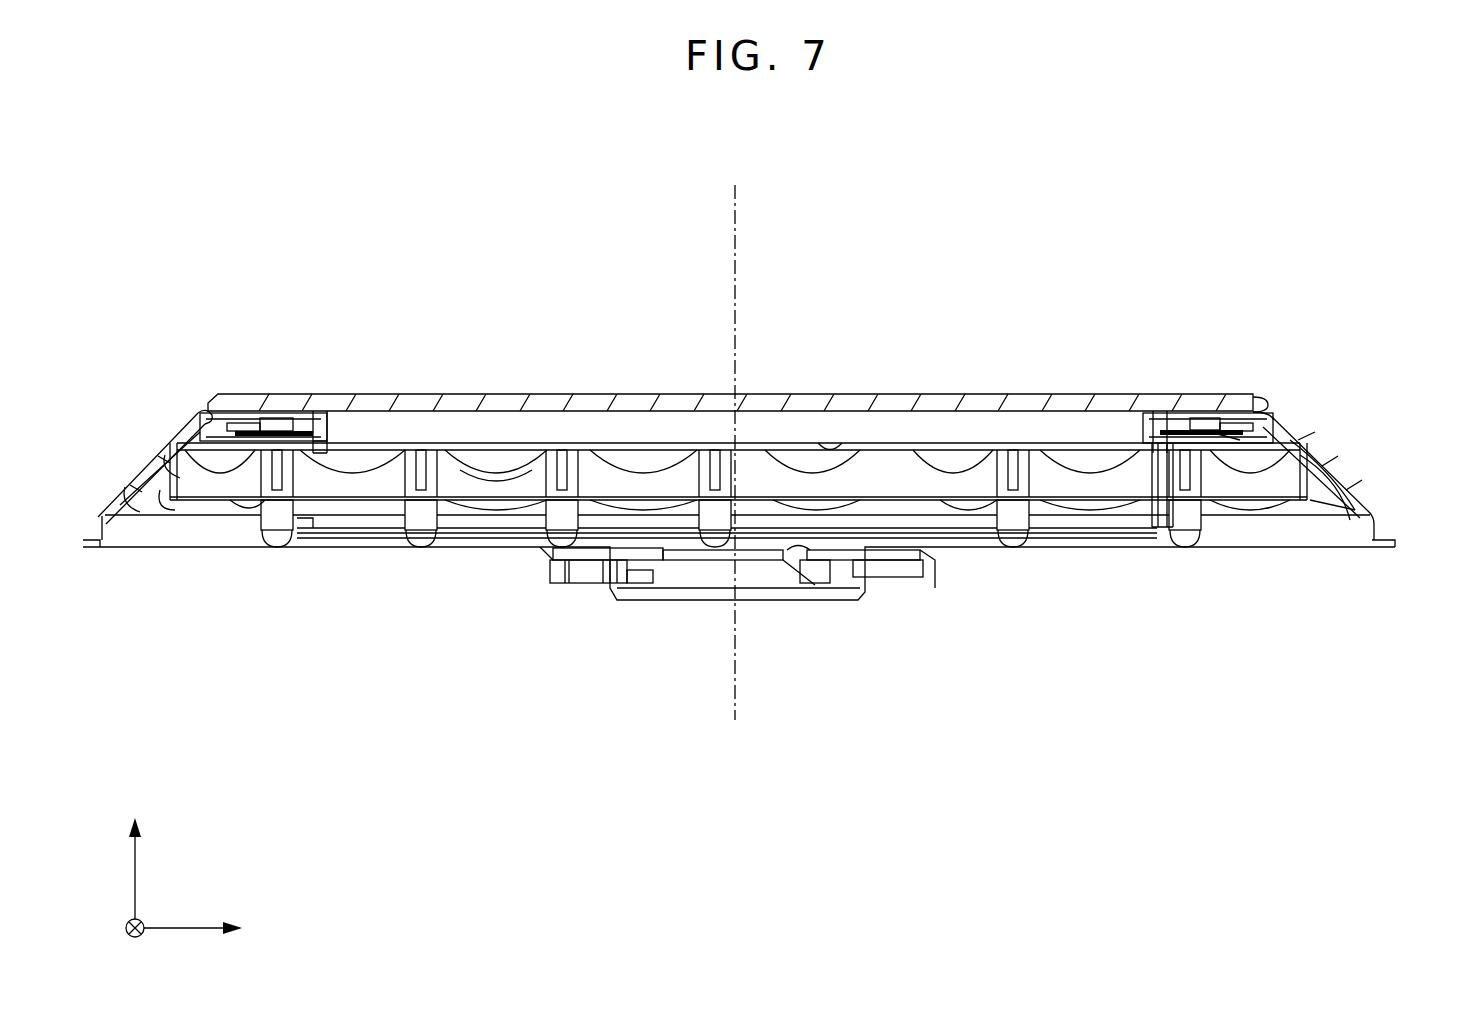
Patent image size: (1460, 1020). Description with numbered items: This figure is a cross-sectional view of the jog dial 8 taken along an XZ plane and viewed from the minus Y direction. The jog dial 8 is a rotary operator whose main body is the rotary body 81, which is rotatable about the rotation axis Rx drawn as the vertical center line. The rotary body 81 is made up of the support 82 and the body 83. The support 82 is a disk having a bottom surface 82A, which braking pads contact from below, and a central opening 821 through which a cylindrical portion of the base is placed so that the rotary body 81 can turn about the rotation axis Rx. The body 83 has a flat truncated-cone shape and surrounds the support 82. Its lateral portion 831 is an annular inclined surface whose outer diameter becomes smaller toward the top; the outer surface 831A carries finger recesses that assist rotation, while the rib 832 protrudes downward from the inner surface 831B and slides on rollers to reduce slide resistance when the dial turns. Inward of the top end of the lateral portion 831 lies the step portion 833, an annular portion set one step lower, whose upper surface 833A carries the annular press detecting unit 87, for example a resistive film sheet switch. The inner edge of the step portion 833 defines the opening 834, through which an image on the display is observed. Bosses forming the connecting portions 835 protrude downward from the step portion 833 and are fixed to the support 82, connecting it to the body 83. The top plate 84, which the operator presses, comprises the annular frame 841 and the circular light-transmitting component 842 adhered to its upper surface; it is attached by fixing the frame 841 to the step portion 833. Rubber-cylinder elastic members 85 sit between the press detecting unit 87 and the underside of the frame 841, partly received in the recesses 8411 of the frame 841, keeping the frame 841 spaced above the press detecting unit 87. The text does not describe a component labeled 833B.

The jog dial 8 is at (1190, 258).
The rotary body 81 is at (1145, 642).
The support 82 is at (1090, 549).
The bottom surface 82A is at (340, 542).
The opening 821 is at (792, 552).
The body 83 is at (1142, 502).
The lateral portion 831 is at (1322, 452).
The outer surface 831A is at (172, 433).
The inner surface 831B is at (1337, 515).
The rib 832 is at (508, 484).
The step portion 833 is at (318, 446).
The surface in the +Z direction of the step portion 833A is at (288, 422).
The second holding portion 833B is at (340, 450).
The opening 834 is at (318, 418).
The connecting portion 835 is at (280, 520).
The top plate 84 is at (896, 395).
The frame 841 is at (1260, 398).
The recess 8411 is at (250, 414).
The light-transmitting component 842 is at (462, 395).
The elastic member 85 is at (281, 428).
The press detecting unit 87 is at (210, 411).
The rotation axis Rx is at (738, 712).